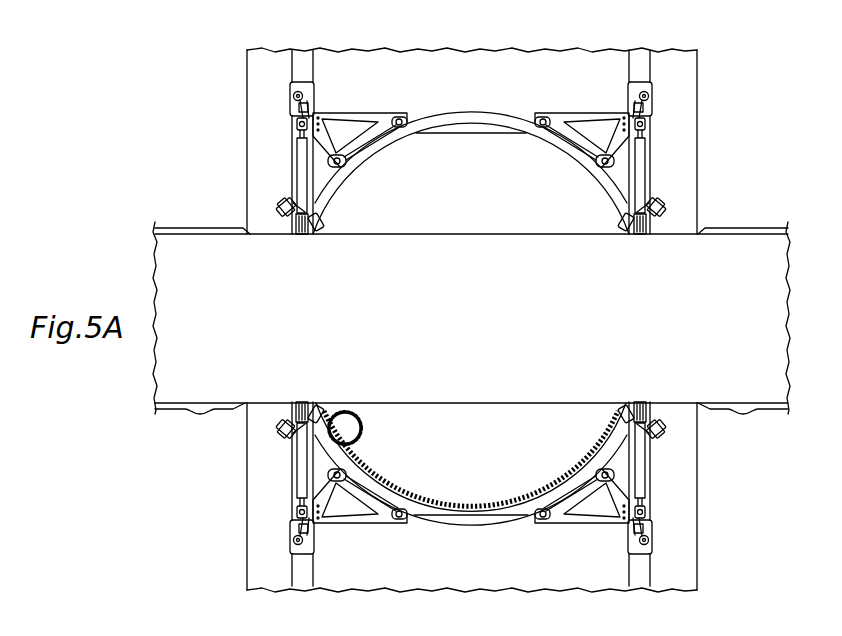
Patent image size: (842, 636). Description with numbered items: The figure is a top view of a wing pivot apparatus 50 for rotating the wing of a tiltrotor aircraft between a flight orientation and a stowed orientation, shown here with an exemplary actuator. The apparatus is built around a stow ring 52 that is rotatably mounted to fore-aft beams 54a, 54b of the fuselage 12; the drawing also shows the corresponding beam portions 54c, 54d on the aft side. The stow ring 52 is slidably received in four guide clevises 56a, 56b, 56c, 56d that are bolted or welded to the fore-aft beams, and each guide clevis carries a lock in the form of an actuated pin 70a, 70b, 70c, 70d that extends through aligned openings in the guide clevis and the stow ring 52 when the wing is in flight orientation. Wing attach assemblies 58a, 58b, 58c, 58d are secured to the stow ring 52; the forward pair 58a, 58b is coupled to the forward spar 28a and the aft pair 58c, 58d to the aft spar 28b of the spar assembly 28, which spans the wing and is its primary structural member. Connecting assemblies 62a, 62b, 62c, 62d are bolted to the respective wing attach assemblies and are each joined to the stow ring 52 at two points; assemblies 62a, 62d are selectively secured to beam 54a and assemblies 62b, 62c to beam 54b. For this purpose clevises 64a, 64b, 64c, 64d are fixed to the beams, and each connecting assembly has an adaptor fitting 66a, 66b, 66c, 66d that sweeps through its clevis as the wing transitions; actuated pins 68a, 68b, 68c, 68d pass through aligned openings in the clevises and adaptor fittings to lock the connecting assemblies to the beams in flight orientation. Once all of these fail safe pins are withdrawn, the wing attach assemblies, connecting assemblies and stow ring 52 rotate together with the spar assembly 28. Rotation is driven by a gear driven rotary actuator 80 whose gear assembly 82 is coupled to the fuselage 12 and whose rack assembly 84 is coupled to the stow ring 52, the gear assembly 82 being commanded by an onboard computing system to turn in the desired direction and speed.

The fuselage 12 is at (687, 135).
The spar assembly 28 is at (461, 328).
The forward spar 28a is at (470, 233).
The aft spar 28b is at (517, 405).
The wing pivot apparatus 50 is at (203, 132).
The stow ring 52 is at (470, 115).
The fore-aft beam 54a is at (642, 60).
The fore-aft beam 54b is at (300, 58).
The post 54c is at (293, 552).
The post 54d is at (652, 552).
The guide clevis 56a is at (624, 221).
The guide clevis 56b is at (320, 222).
The guide clevis 56c is at (332, 403).
The guide clevis 56d is at (625, 412).
The wing attach assembly 58a is at (657, 227).
The wing attach assembly 58b is at (292, 226).
The wing attach assembly 58c is at (285, 413).
The wing attach assembly 58d is at (655, 412).
The connecting assembly 62a is at (583, 107).
The connecting assembly 62b is at (358, 107).
The connecting assembly 62c is at (358, 532).
The connecting assembly 62d is at (585, 532).
The clevis 64a is at (650, 85).
The clevis 64b is at (293, 83).
The clevis 64c is at (293, 543).
The clevis 64d is at (652, 543).
The adaptor fitting 66a is at (652, 108).
The adaptor fitting 66b is at (293, 108).
The adaptor fitting 66c is at (293, 530).
The adaptor fitting 66d is at (652, 530).
The actuated pin 68a is at (638, 97).
The actuated pin 68b is at (305, 97).
The actuated pin 68c is at (298, 540).
The actuated pin 68d is at (644, 540).
The actuated pin 70a is at (660, 200).
The actuated pin 70b is at (280, 200).
The actuated pin 70c is at (280, 433).
The actuated pin 70d is at (663, 433).
The gear driven rotary actuator 80 is at (362, 454).
The gear assembly 82 is at (363, 418).
The rack assembly 84 is at (467, 502).